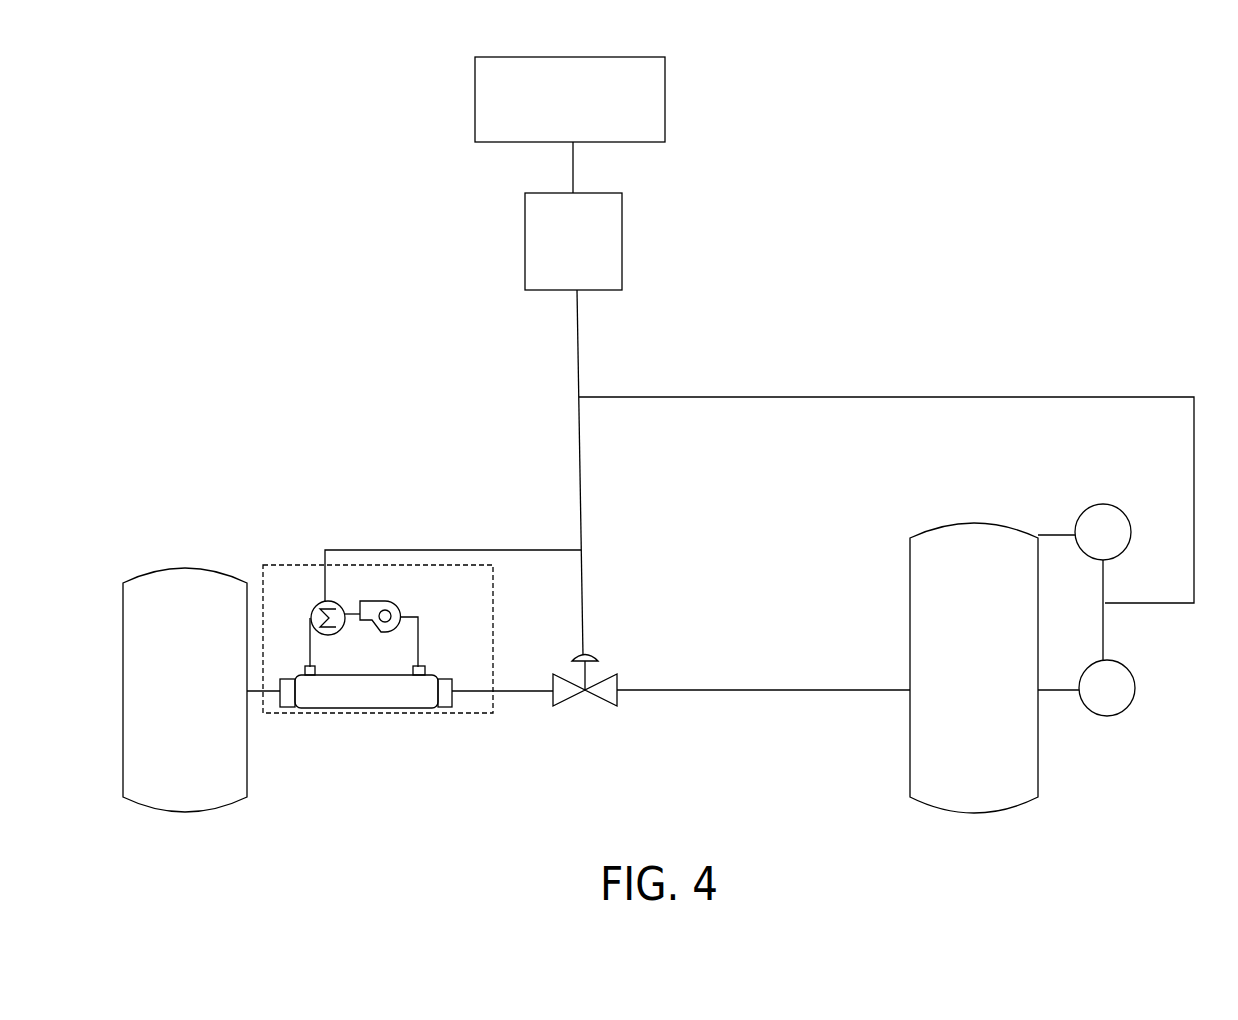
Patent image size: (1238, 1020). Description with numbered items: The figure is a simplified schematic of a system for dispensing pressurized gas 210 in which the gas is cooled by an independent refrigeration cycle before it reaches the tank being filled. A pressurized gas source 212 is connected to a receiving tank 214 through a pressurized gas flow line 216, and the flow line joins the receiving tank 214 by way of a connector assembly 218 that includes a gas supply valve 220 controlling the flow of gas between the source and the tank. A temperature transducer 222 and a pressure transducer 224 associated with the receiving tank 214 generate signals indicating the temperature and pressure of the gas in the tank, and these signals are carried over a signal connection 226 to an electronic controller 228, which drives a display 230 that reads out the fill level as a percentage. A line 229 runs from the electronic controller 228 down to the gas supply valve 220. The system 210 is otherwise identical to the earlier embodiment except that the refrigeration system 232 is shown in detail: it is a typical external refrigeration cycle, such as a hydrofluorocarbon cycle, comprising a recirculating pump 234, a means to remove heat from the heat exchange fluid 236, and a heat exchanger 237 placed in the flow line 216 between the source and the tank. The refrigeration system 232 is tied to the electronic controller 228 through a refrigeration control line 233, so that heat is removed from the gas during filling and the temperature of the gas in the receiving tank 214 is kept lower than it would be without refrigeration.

The system for dispensing pressurized gas 210 is at (870, 201).
The pressurized gas source 212 is at (203, 567).
The receiving tank 214 is at (1038, 773).
The pressurized gas flow line 216 is at (502, 691).
The connector assembly 218 is at (787, 689).
The gas supply valve 220 is at (585, 690).
The temperature transducer 222 is at (1128, 708).
The pressure transducer 224 is at (1101, 504).
The signal connection 226 is at (938, 393).
The electronic controller 228 is at (525, 252).
The control signal line 229 is at (583, 572).
The display 230 is at (475, 102).
The refrigeration system 232 is at (293, 716).
The refrigeration control line 233 is at (483, 550).
The recirculating pump 234 is at (397, 603).
The means to remove heat from the heat exchange fluid 236 is at (317, 602).
The heat exchanger 237 is at (340, 710).